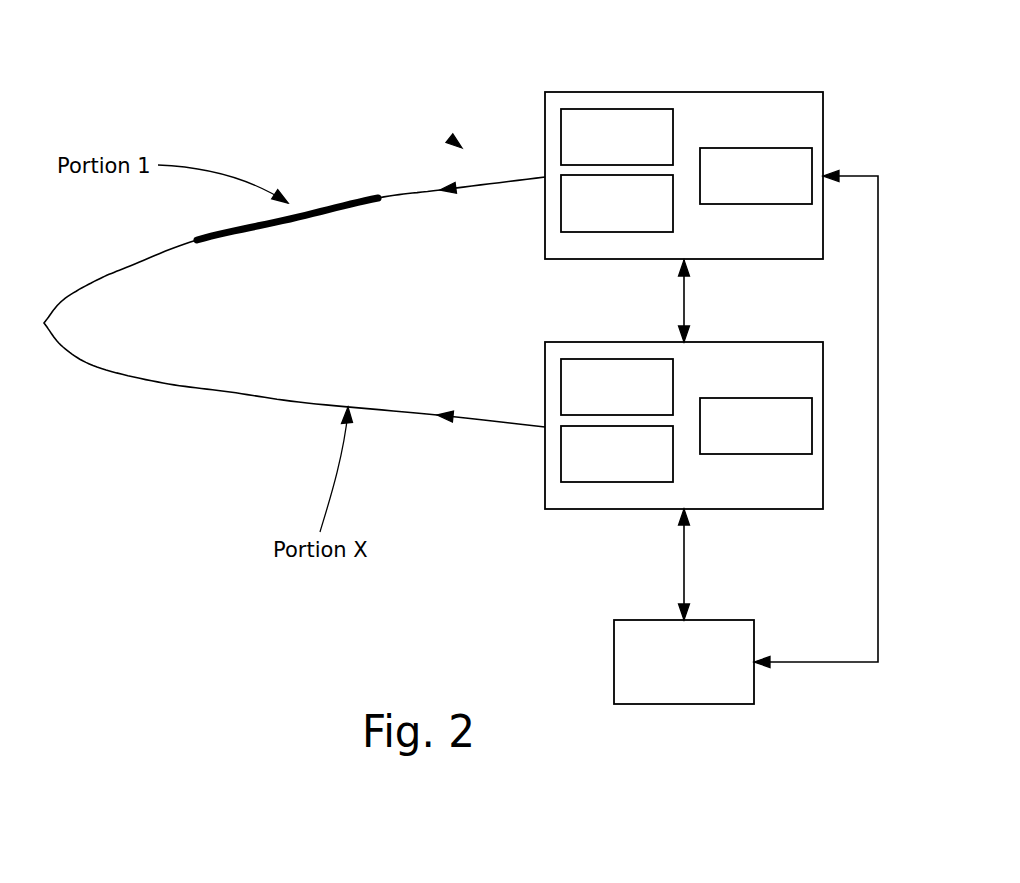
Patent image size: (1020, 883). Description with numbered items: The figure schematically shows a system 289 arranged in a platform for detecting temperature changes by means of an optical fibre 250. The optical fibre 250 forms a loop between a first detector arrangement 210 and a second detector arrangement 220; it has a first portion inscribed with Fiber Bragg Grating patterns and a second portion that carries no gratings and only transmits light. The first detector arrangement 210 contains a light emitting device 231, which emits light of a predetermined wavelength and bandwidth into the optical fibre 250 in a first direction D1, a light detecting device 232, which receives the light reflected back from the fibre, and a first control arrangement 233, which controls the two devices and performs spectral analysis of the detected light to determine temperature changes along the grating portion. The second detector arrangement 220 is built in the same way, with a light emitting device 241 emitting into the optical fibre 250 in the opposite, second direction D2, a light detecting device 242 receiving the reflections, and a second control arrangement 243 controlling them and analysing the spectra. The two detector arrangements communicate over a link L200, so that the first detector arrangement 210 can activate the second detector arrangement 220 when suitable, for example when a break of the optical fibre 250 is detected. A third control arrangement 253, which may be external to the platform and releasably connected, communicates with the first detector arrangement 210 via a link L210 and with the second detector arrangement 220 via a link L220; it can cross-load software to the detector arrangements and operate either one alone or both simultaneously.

The first detector arrangement 210 is at (684, 147).
The second detector arrangement 220 is at (684, 472).
The light emitting device 231 is at (617, 137).
The light detecting device 232 is at (617, 203).
The first control arrangement 233 is at (756, 176).
The light emitting device 241 is at (617, 387).
The light detecting device 242 is at (617, 454).
The second control arrangement 243 is at (756, 426).
The optical fibre 250 is at (233, 392).
The third control arrangement 253 is at (684, 662).
The system 289 is at (462, 148).
The link L200 is at (683, 303).
The link L210 is at (878, 620).
The link L220 is at (686, 565).
The first direction D1 is at (426, 178).
The second direction D2 is at (435, 399).